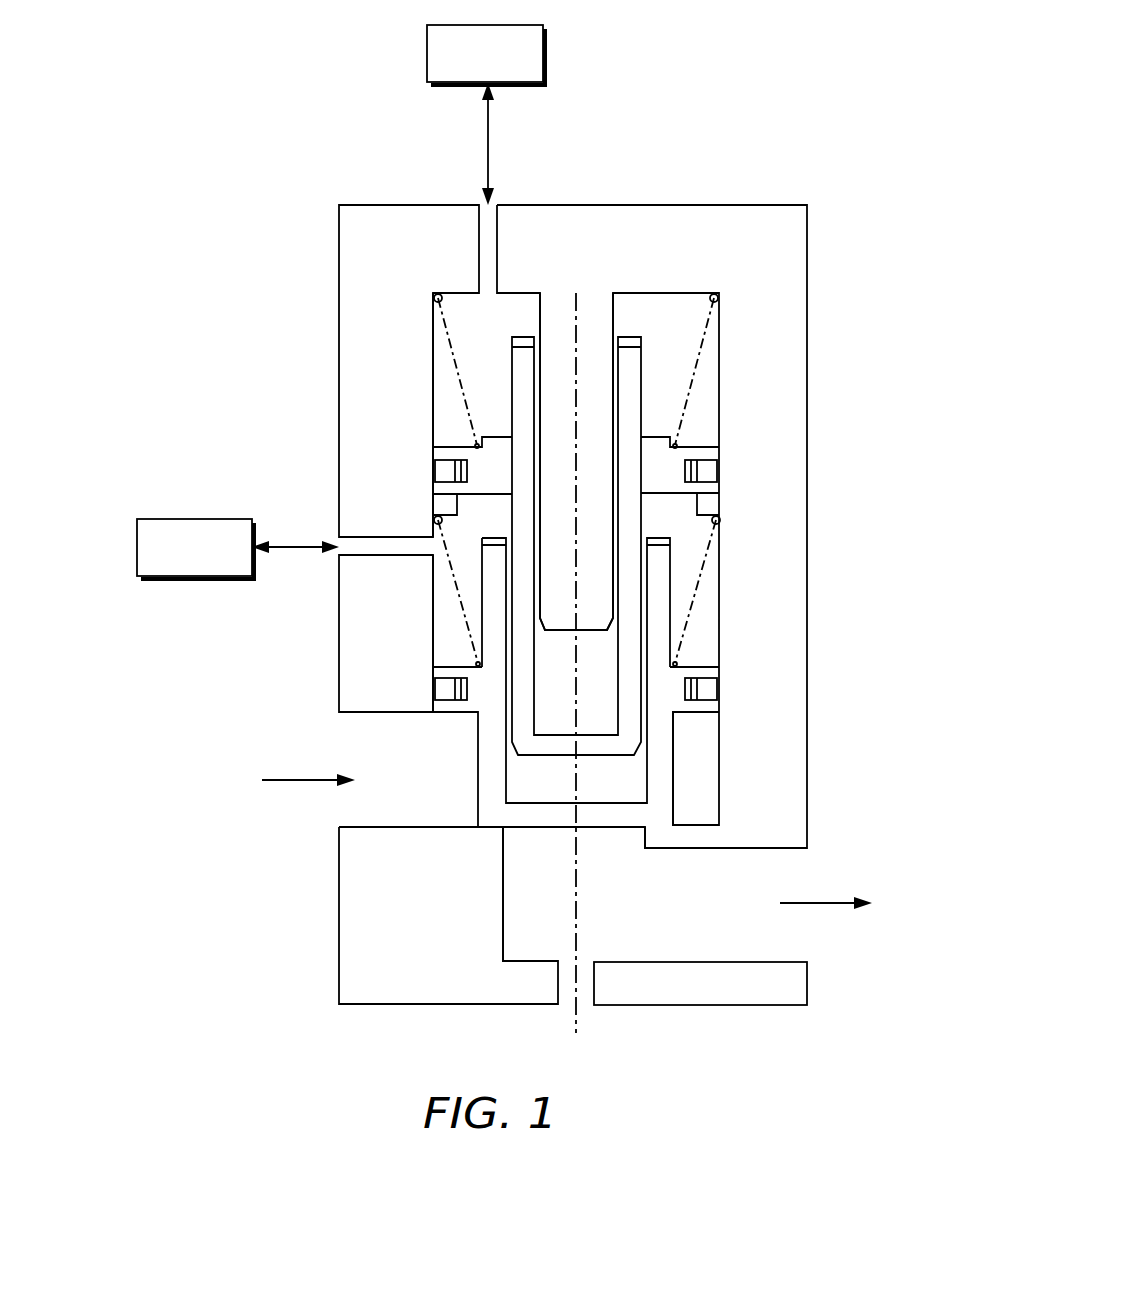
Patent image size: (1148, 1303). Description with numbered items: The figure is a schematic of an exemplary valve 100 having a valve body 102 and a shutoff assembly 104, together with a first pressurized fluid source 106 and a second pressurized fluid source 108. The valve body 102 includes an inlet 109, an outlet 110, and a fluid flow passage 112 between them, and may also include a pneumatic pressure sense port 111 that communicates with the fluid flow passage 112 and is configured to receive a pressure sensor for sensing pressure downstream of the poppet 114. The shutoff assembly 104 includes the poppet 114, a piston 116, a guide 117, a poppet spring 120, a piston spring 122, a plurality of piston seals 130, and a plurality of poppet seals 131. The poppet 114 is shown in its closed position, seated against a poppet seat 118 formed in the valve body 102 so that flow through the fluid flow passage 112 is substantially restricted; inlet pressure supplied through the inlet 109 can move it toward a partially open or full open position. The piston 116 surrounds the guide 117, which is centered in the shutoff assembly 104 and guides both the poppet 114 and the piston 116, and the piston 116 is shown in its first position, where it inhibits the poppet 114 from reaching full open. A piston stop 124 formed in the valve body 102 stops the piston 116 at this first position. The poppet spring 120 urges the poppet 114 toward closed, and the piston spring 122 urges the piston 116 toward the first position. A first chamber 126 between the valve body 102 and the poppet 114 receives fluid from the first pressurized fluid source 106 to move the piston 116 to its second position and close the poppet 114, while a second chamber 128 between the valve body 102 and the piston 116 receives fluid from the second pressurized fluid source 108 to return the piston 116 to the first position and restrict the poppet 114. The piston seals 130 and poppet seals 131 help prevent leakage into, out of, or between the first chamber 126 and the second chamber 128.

The valve 100 is at (160, 62).
The valve body 102 is at (797, 270).
The shutoff assembly 104 is at (668, 321).
The first pressurized fluid source 106 is at (152, 519).
The second pressurized fluid source 108 is at (445, 25).
The inlet 109 is at (308, 776).
The outlet 110 is at (825, 900).
The pneumatic pressure sense port 111 is at (586, 950).
The fluid flow passage 112 is at (722, 919).
The poppet 114 is at (667, 788).
The piston 116 is at (627, 362).
The guide 117 is at (603, 506).
The poppet seat 118 is at (500, 829).
The poppet spring 120 is at (450, 571).
The piston spring 122 is at (444, 318).
The piston stop 124 is at (457, 504).
The first chamber 126 is at (443, 636).
The second chamber 128 is at (456, 300).
The piston seals 130 is at (445, 471).
The poppet seals 131 is at (445, 690).